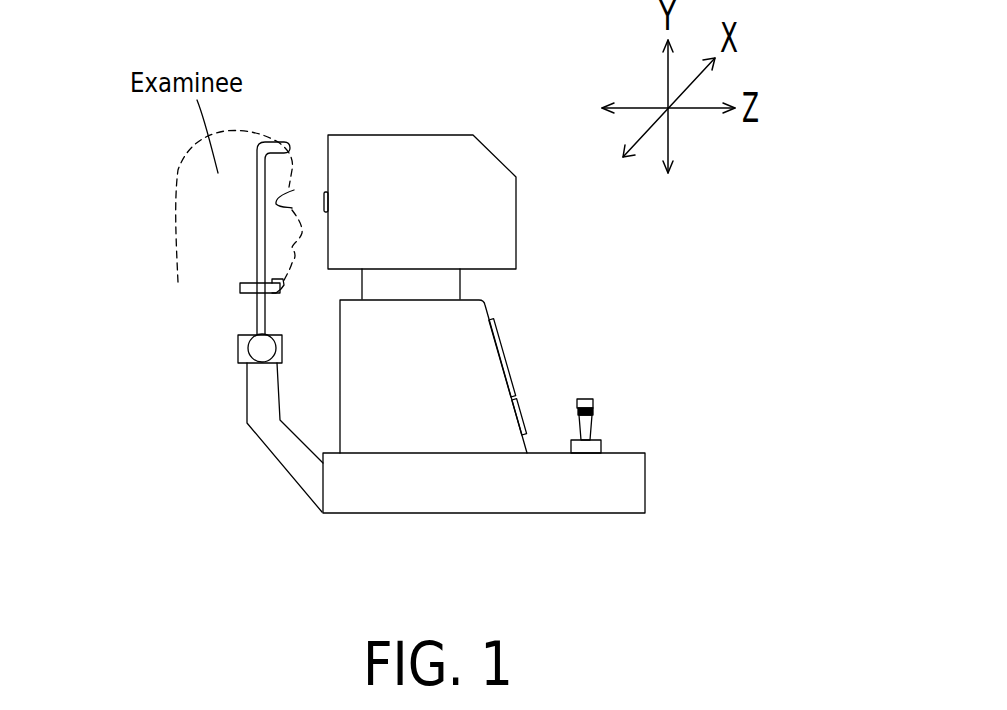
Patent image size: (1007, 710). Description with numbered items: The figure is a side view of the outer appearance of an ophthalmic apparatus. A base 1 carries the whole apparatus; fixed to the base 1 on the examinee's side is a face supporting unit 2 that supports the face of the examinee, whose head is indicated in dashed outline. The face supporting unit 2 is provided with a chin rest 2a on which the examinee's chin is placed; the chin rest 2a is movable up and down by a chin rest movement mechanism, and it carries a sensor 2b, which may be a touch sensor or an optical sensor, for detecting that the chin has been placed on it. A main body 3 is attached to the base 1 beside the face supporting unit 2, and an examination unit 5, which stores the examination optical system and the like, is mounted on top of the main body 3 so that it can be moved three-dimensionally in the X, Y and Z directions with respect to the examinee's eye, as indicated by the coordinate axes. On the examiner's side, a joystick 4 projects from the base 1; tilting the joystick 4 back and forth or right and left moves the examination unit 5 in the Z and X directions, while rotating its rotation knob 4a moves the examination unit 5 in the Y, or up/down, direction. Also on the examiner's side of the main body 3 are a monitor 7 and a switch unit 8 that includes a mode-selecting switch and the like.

The base 1 is at (442, 490).
The face supporting unit 2 is at (206, 358).
The chin rest 2a is at (240, 288).
The sensor 2b is at (281, 294).
The main body 3 is at (470, 370).
The joystick 4 is at (593, 403).
The rotation knob 4a is at (593, 412).
The examination unit 5 is at (398, 153).
The monitor 7 is at (502, 330).
The switch unit 8 is at (520, 410).